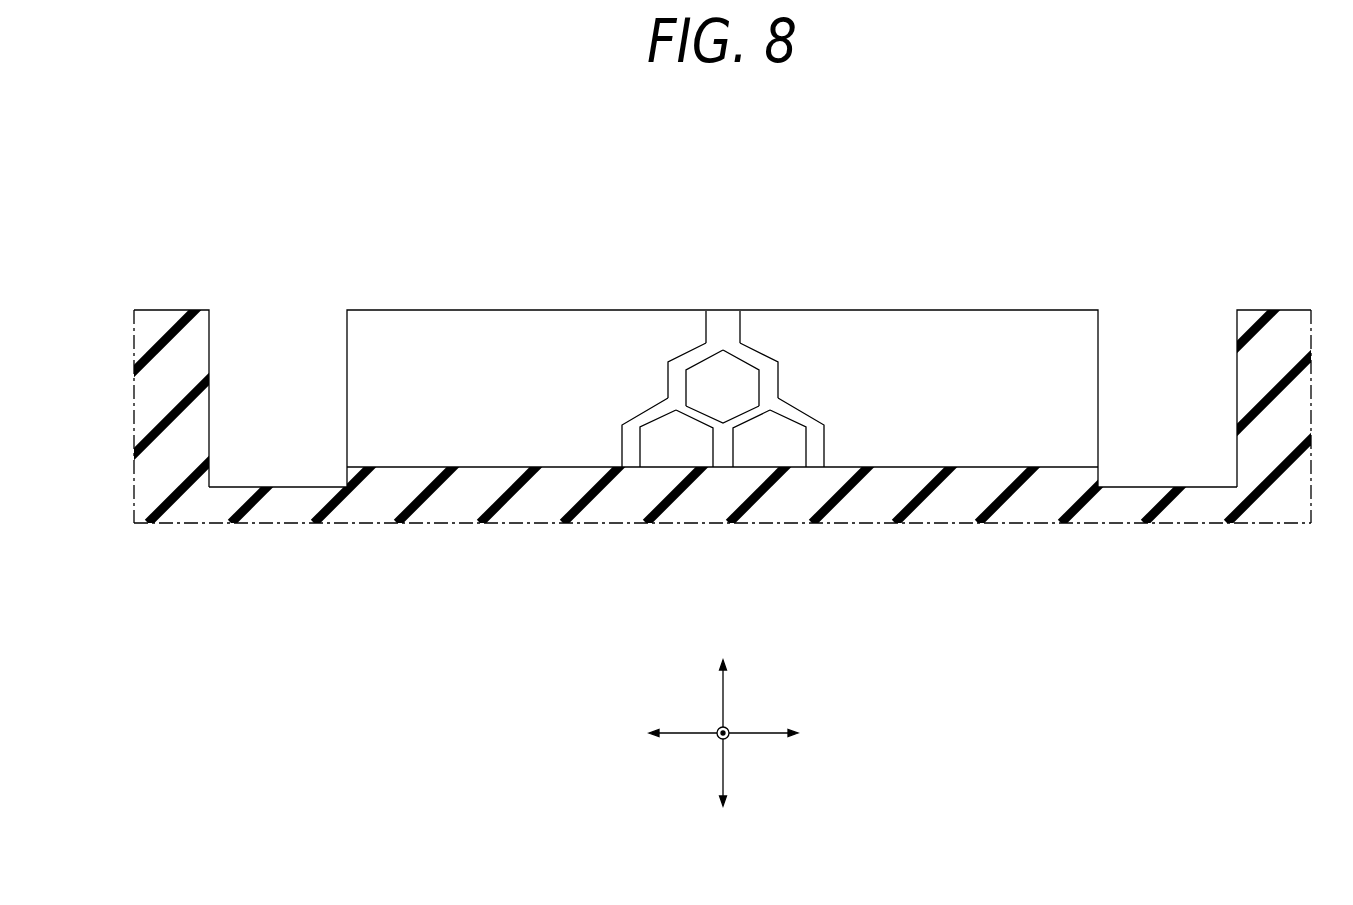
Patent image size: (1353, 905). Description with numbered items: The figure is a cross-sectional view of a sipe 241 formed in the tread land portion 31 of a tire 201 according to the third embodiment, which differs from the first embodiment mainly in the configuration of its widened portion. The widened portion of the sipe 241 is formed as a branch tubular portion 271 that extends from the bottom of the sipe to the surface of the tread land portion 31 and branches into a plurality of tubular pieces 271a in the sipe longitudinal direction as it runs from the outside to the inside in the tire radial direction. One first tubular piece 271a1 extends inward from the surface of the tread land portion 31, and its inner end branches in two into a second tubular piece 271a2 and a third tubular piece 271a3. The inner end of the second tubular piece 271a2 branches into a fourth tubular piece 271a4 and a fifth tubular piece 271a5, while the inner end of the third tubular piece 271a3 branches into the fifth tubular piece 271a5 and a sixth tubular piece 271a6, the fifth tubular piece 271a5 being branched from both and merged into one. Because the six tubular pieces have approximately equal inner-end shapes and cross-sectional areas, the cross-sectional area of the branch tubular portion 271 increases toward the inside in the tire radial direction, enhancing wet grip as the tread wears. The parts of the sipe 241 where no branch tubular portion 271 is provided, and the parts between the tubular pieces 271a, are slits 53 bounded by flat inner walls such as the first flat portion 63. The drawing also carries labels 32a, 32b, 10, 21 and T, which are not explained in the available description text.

The tire 201 is at (1062, 160).
The first flat portion 63 is at (470, 430).
The tread land portion 31 is at (719, 347).
The side wall portion 32b is at (173, 303).
The flow path forming portion 32a is at (556, 293).
The sipe 241 is at (851, 328).
The head main body 10 is at (723, 367).
The recess 21 is at (280, 328).
The thickness / top surface T is at (440, 310).
The slit 53 is at (380, 327).
The branch tubular portion 271 is at (766, 351).
The tubular pieces 271a is at (749, 439).
The first tubular piece 271a1 is at (722, 329).
The second tubular piece 271a2 is at (677, 386).
The third tubular piece 271a3 is at (770, 384).
The fourth tubular piece 271a4 is at (631, 446).
The fifth tubular piece 271a5 is at (723, 455).
The sixth tubular piece 271a6 is at (815, 449).